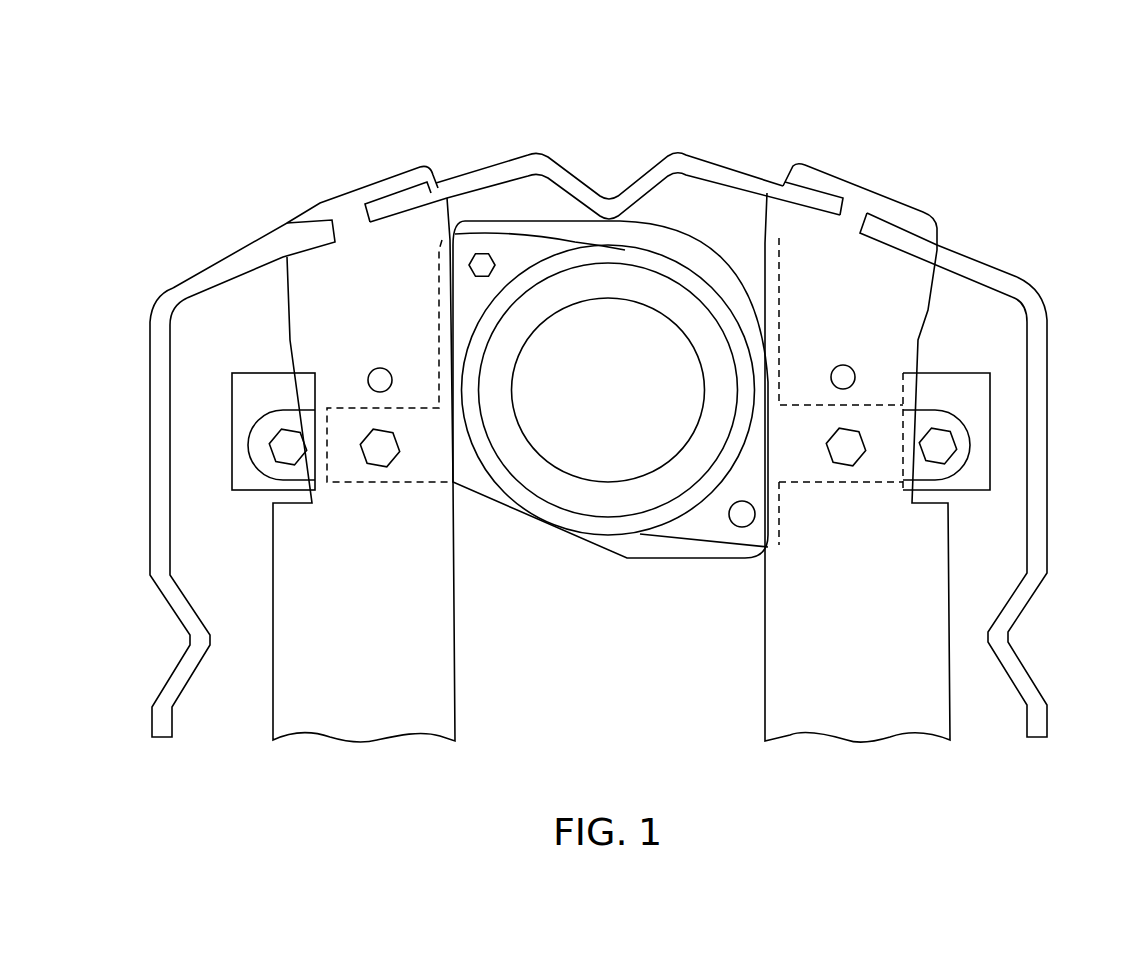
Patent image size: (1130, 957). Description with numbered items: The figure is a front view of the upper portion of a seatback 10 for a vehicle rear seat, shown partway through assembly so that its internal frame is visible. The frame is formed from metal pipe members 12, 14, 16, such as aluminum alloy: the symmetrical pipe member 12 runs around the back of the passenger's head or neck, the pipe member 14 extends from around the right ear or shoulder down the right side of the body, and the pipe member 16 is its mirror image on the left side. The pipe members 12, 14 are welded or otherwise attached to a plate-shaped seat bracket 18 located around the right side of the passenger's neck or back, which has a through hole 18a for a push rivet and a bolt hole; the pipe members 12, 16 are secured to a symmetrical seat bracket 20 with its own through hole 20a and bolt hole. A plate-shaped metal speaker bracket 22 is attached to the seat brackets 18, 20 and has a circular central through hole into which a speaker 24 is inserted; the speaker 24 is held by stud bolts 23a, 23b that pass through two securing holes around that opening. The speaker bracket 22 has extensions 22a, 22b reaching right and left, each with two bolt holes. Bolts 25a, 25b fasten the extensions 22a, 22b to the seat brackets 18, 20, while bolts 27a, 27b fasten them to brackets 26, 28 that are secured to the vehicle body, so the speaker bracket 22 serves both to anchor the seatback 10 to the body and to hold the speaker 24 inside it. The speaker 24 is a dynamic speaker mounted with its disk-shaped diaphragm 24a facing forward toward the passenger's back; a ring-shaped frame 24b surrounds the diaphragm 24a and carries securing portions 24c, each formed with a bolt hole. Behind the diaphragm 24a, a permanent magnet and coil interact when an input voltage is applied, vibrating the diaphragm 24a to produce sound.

The seatback 10 is at (1023, 116).
The pipe member 12 is at (569, 220).
The pipe member 14 is at (197, 274).
The pipe member 16 is at (1017, 277).
The seat bracket 18 is at (381, 182).
The through hole 18a is at (380, 368).
The seat bracket 20 is at (862, 188).
The through hole 20a is at (846, 366).
The speaker bracket 22 is at (592, 220).
The extension 22a is at (458, 485).
The extension 22b is at (779, 546).
The stud bolt 23a is at (484, 252).
The stud bolt 23b is at (742, 528).
The speaker 24 is at (650, 302).
The diaphragm 24a is at (680, 266).
The frame 24b is at (725, 242).
The securing portion 24c is at (512, 236).
The bolt 25a is at (377, 467).
The bolt 25b is at (852, 465).
The bracket 26 is at (232, 414).
The bolt 27a is at (278, 463).
The bolt 27b is at (947, 460).
The bracket 28 is at (990, 407).